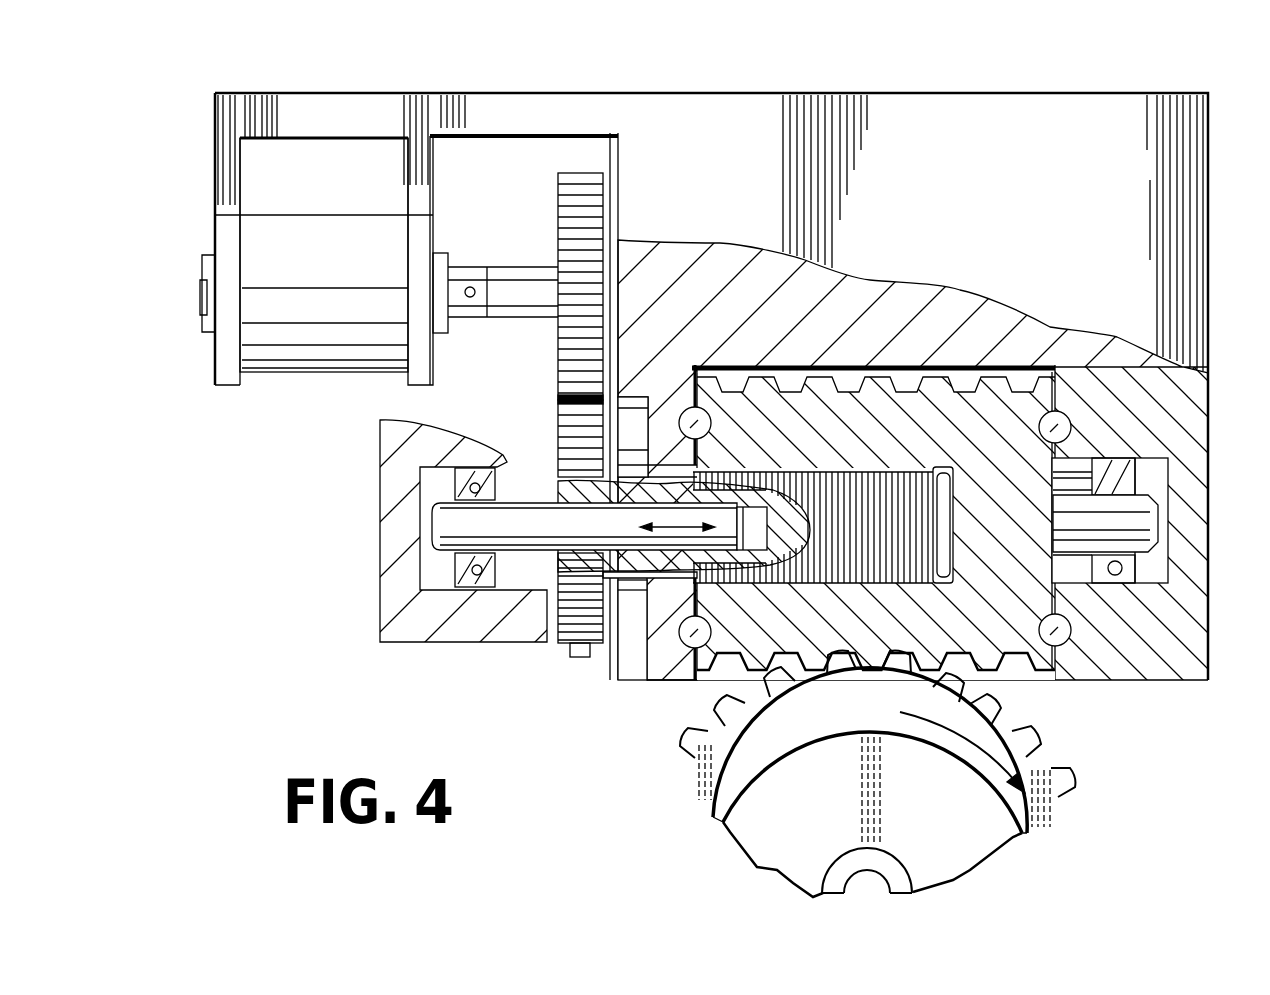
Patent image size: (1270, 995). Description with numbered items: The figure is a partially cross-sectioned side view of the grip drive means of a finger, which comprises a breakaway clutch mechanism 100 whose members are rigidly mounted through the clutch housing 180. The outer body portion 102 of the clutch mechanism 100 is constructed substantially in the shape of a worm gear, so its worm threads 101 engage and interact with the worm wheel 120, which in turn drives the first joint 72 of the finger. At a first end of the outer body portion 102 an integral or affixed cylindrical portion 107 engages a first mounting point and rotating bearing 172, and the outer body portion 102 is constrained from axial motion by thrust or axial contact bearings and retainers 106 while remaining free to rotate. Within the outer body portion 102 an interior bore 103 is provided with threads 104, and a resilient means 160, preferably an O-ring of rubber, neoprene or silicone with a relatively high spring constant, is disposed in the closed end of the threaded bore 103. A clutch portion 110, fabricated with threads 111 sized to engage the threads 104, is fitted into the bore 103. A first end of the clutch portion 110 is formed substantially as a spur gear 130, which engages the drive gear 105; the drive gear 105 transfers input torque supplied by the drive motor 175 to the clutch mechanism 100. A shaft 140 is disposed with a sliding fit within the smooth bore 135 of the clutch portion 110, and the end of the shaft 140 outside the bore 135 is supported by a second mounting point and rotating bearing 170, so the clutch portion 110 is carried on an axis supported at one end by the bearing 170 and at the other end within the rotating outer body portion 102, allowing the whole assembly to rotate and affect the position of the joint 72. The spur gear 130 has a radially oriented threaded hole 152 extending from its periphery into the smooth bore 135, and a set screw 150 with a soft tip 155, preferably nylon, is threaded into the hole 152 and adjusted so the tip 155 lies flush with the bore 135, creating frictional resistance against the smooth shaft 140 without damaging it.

The first joint 72 is at (863, 880).
The breakaway clutch mechanism 100 is at (588, 798).
The worm threads 101 is at (995, 682).
The outer body portion 102 is at (900, 383).
The interior bore 103 is at (923, 535).
The threads 104 is at (825, 473).
The drive gear 105 is at (558, 203).
The thrust or axial contact bearings and retainers 106 is at (690, 410).
The cylindrical portion 107 is at (1105, 473).
The clutch portion 110 is at (755, 655).
The threads 111 is at (800, 468).
The worm wheel 120 is at (943, 797).
The spur gear 130 is at (558, 448).
The smooth bore 135 is at (755, 522).
The shaft 140 is at (442, 520).
The set screw 150 is at (578, 657).
The radially oriented threaded hole 152 is at (560, 612).
The soft tip 155 is at (558, 556).
The resilient means 160 is at (945, 567).
The second mounting point and rotating bearing 170 is at (478, 572).
The first mounting point and rotating bearing 172 is at (1133, 558).
The drive motor 175 is at (313, 242).
The clutch housing 180 is at (711, 363).